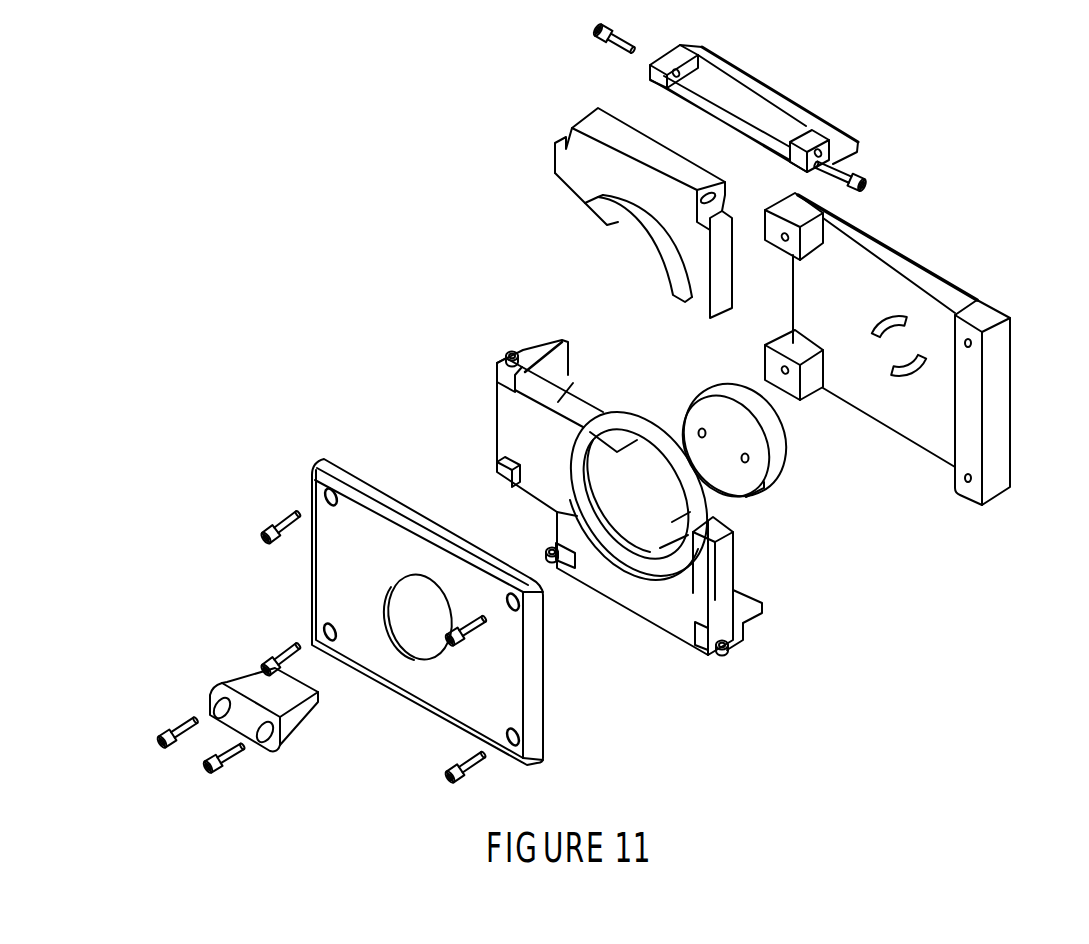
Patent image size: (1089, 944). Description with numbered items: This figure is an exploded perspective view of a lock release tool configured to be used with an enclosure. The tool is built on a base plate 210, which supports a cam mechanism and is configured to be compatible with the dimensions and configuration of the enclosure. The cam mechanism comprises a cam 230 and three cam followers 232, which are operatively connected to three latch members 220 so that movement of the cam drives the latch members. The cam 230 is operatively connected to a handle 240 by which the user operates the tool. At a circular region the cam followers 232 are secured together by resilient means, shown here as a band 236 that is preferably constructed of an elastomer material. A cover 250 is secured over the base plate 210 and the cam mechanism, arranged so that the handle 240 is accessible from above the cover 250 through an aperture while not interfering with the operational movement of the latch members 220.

The base plate 210 is at (913, 287).
The latch member 220 is at (752, 93).
The cam 230 is at (767, 442).
The cam follower 232 is at (523, 415).
The band 236 is at (692, 495).
The handle 240 is at (297, 720).
The cover 250 is at (347, 574).